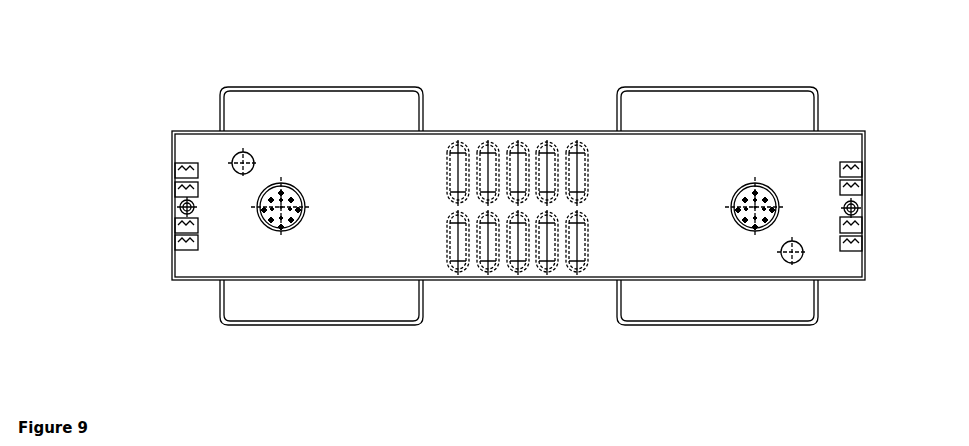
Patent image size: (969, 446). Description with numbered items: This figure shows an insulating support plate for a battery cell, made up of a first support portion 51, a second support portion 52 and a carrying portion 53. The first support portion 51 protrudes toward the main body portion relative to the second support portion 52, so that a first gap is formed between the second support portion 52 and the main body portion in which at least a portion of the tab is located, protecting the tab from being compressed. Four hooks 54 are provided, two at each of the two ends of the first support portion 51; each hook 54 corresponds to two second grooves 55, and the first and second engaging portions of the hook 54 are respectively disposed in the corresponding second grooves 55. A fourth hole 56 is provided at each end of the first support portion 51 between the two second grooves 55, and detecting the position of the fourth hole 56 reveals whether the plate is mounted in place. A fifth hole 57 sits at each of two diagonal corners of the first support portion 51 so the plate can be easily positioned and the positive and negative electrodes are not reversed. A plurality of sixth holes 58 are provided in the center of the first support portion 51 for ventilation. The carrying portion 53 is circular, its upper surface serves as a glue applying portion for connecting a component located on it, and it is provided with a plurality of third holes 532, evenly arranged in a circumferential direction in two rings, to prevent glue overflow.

The first support portion 51 is at (843, 140).
The second support portion 52 is at (322, 88).
The carrying portion 53 is at (283, 232).
The third holes 532 is at (300, 194).
The hook 54 is at (174, 170).
The second grooves 55 is at (175, 191).
The fourth hole 56 is at (180, 207).
The fifth hole 57 is at (236, 157).
The sixth holes 58 is at (510, 140).